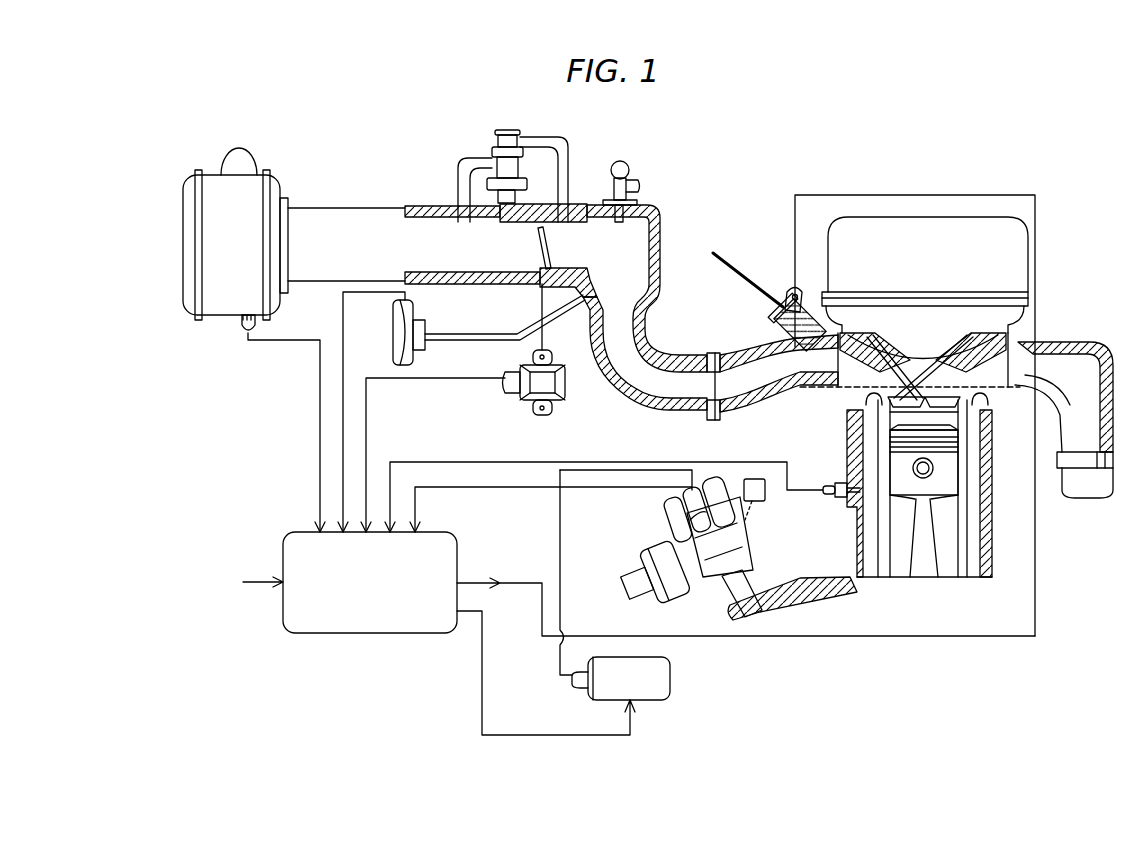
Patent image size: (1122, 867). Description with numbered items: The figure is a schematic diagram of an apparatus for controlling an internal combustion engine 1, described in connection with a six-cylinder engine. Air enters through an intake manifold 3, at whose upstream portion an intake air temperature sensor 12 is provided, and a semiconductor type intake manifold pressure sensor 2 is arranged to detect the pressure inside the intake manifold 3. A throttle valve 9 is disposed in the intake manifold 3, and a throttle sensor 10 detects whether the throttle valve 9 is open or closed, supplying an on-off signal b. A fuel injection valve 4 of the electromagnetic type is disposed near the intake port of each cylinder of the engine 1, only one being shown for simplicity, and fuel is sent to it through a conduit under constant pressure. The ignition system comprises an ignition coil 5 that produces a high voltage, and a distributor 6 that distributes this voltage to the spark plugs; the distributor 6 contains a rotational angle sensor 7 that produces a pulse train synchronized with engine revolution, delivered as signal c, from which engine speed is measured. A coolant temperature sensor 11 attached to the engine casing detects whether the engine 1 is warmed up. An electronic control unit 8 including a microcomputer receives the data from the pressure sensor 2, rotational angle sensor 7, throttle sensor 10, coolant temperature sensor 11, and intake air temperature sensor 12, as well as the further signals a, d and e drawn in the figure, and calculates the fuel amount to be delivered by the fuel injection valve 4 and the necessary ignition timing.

The engine 1 is at (975, 215).
The intake manifold pressure sensor 2 is at (427, 353).
The intake manifold 3 is at (668, 228).
The fuel injection valve 4 is at (784, 290).
The ignition coil 5 is at (672, 680).
The distributor 6 is at (755, 552).
The rotational angle sensor 7 is at (770, 500).
The electronic control unit 8 is at (390, 635).
The throttle valve 9 is at (553, 248).
The throttle sensor 10 is at (565, 390).
The coolant temperature sensor 11 is at (832, 480).
The intake air temperature sensor 12 is at (242, 327).
The throttle position signal a is at (352, 345).
The on-off signal b is at (383, 427).
The signal from rotational angle sensor c is at (515, 452).
The ignition signal d is at (471, 452).
The air temperature signal e is at (310, 400).